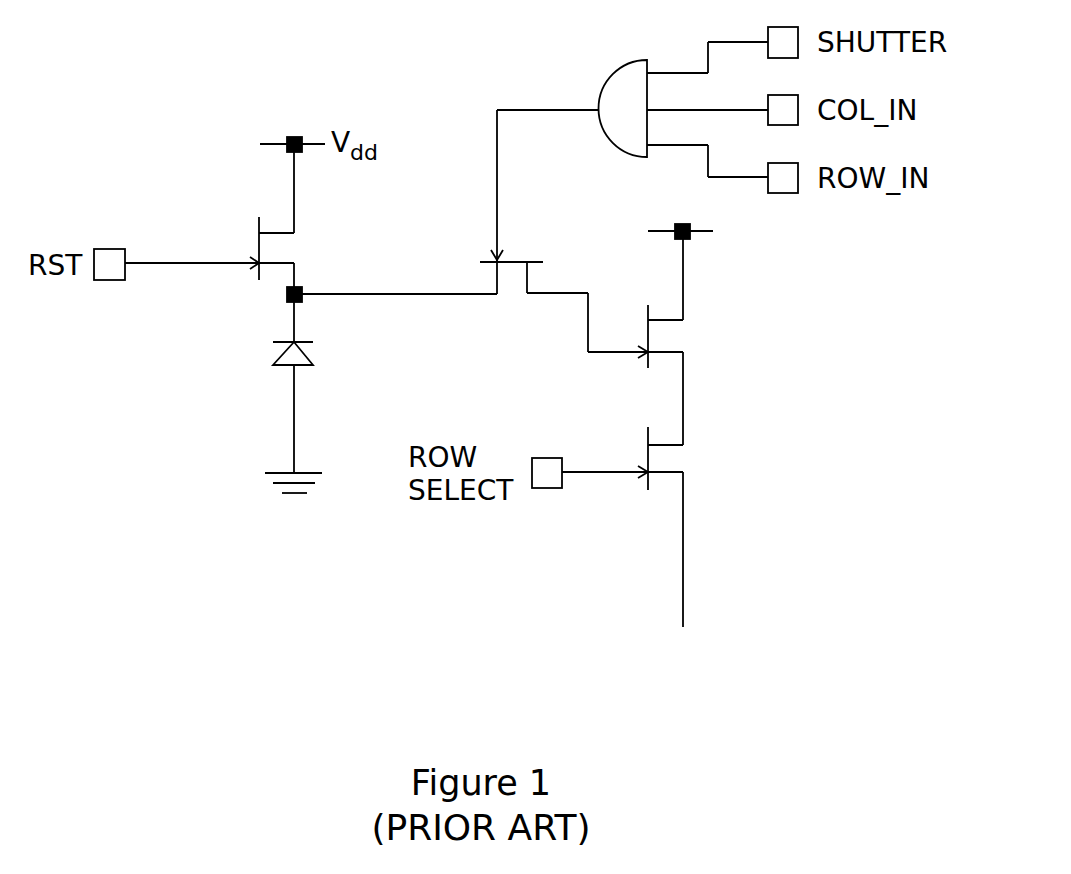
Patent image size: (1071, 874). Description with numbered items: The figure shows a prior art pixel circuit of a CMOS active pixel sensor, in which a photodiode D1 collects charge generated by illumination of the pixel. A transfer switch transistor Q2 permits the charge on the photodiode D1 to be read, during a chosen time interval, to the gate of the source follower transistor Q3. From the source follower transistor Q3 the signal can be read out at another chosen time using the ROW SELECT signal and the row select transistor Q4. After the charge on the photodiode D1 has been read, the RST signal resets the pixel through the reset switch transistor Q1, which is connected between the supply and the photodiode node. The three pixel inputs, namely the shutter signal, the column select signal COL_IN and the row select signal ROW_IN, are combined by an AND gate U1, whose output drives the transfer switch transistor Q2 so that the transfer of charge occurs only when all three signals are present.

The reset switch transistor Q1 is at (272, 279).
The transfer switch transistor Q2 is at (564, 234).
The source follower transistor Q3 is at (656, 375).
The row select transistor Q4 is at (655, 527).
The photodiode D1 is at (318, 404).
The AND gate U1 is at (632, 120).